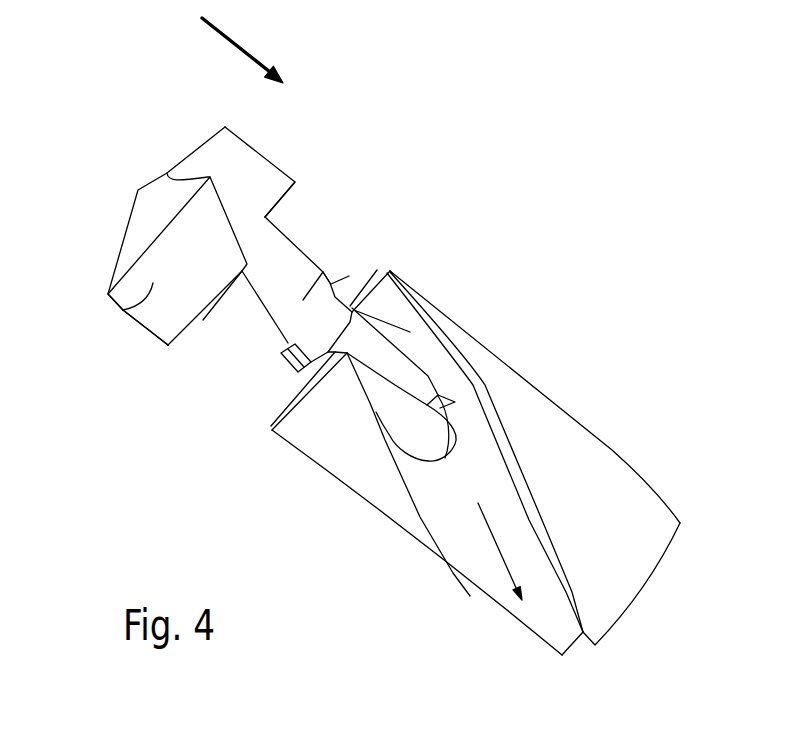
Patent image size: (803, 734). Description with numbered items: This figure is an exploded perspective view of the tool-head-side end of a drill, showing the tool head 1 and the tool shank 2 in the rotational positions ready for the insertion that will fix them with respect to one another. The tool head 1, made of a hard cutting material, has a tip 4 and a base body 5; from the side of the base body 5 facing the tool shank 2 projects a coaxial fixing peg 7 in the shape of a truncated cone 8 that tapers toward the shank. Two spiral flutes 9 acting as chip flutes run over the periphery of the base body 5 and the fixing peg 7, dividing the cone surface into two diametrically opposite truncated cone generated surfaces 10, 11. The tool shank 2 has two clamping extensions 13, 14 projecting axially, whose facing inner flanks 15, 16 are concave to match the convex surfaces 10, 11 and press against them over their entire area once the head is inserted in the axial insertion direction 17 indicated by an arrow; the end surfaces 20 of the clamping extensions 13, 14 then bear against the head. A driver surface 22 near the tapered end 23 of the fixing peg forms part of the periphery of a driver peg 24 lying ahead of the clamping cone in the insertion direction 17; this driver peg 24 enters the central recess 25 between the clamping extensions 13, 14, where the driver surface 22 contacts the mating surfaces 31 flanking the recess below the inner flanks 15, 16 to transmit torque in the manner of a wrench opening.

The tool head 1 is at (172, 112).
The tool shank 2 is at (576, 398).
The tip 4 is at (139, 189).
The base body 5 is at (118, 309).
The fixing peg 7 is at (247, 332).
The truncated cone 8 is at (297, 244).
The spiral flutes 9 is at (272, 278).
The truncated cone generated surface 10 is at (245, 308).
The truncated cone generated surface 11 is at (288, 237).
The clamping extension 13 is at (407, 328).
The clamping extension 14 is at (353, 456).
The inner flank 15 is at (380, 350).
The inner flank 16 is at (308, 382).
The axial insertion direction 17 is at (227, 35).
The end surfaces 20 is at (377, 270).
The driver surface 22 is at (278, 372).
The tapered end 23 is at (377, 270).
The driver peg 24 is at (323, 272).
The central recess 25 is at (433, 430).
The mating surfaces 31 is at (438, 395).